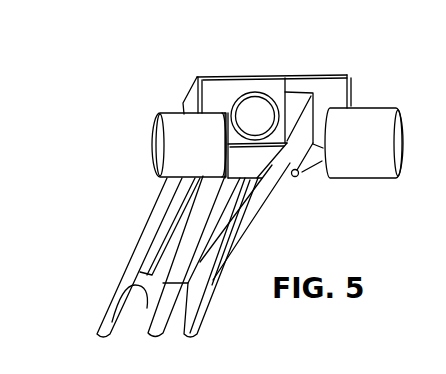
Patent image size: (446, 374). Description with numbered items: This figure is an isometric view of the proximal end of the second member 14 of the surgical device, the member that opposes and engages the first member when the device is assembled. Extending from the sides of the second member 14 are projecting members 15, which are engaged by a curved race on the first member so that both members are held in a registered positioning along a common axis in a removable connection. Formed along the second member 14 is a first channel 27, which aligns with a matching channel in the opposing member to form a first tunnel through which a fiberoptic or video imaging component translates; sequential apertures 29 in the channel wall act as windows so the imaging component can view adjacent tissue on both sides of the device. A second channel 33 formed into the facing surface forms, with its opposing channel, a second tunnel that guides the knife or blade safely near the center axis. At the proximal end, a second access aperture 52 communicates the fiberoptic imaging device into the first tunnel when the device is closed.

The second member 14 is at (348, 80).
The projecting members 15 is at (150, 116).
The first channel 27 is at (193, 226).
The apertures 29 is at (193, 193).
The second channel 33 is at (242, 205).
The second access aperture 52 is at (258, 114).